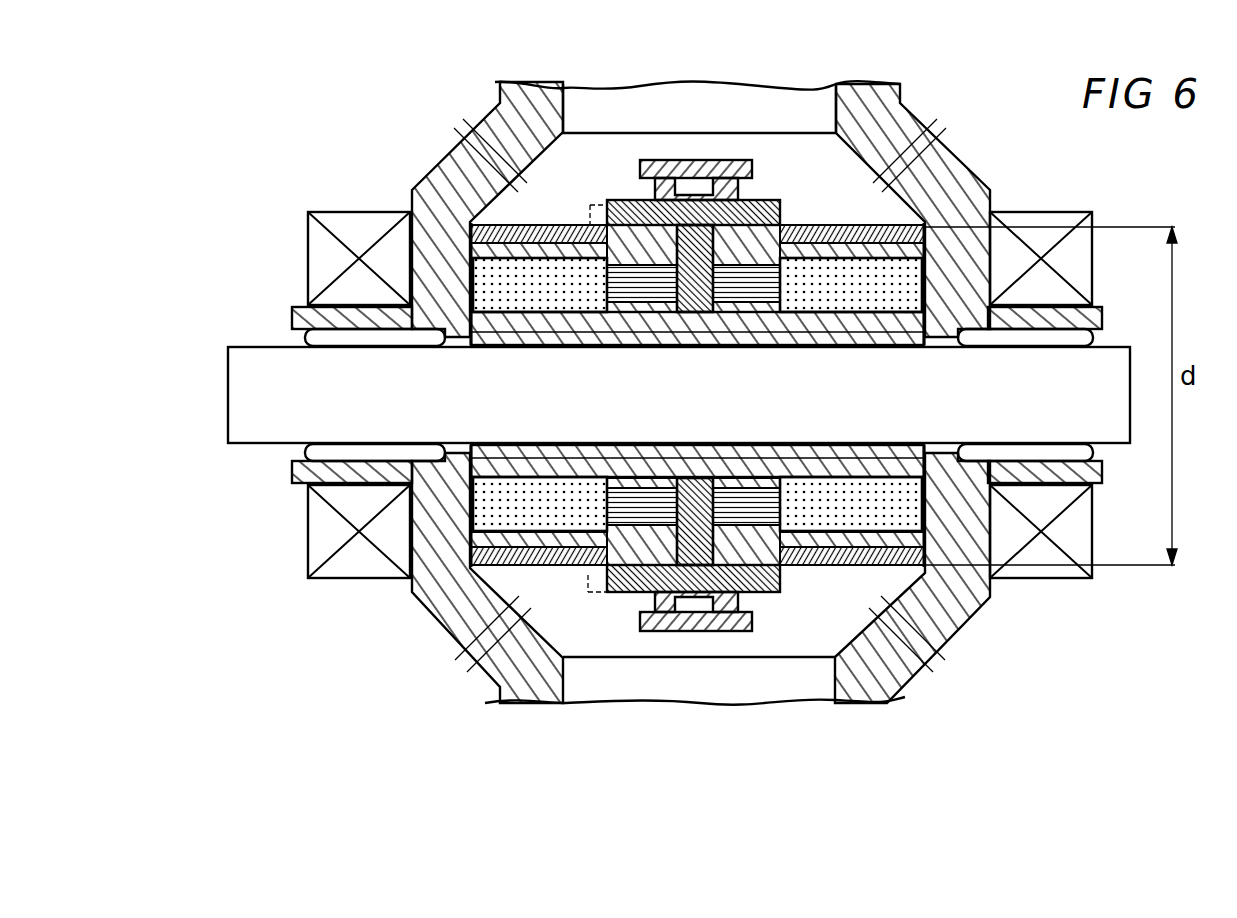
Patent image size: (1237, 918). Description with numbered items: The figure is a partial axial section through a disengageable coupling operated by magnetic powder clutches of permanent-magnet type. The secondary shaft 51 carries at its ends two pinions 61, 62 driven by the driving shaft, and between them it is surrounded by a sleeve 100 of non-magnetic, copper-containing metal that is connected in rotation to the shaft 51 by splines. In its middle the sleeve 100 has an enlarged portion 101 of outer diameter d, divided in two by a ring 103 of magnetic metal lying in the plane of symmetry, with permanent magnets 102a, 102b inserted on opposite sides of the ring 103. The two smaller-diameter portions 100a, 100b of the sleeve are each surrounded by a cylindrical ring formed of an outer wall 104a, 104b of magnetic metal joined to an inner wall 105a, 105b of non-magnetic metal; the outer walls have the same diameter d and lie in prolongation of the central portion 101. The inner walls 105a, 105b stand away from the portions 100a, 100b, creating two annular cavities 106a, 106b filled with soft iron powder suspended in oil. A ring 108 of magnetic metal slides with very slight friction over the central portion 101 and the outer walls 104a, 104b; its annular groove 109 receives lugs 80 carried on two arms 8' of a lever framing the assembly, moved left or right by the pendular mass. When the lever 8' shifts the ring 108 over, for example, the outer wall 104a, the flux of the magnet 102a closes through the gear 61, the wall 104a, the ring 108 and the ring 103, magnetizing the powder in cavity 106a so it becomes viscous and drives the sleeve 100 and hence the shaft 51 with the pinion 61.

The secondary shaft 51 is at (257, 383).
The pinion 61 is at (433, 257).
The pinion 62 is at (988, 298).
The lugs 80 is at (660, 192).
The arms of lever 8' is at (697, 386).
The sleeve 100 is at (873, 603).
The smaller-diameter portion of sleeve 100a is at (410, 593).
The smaller-diameter portion of sleeve 100b is at (990, 600).
The enlarged portion 101 is at (760, 275).
The permanent magnet 102a is at (497, 112).
The permanent magnet 102b is at (836, 233).
The ring of magnetic metal 103 is at (552, 125).
The outer wall 104a is at (470, 205).
The outer wall 104b is at (855, 240).
The inner wall 105a is at (480, 228).
The inner wall 105b is at (970, 283).
The annular cavity 106a is at (502, 287).
The annular cavity 106b is at (850, 282).
The ring of magnetic metal 108 is at (717, 215).
The annular groove 109 is at (613, 185).